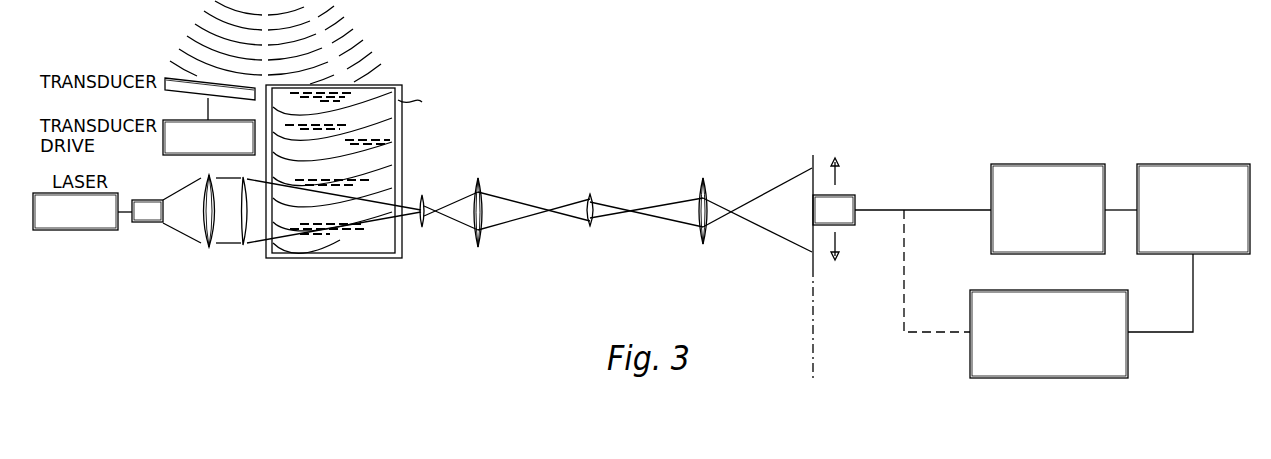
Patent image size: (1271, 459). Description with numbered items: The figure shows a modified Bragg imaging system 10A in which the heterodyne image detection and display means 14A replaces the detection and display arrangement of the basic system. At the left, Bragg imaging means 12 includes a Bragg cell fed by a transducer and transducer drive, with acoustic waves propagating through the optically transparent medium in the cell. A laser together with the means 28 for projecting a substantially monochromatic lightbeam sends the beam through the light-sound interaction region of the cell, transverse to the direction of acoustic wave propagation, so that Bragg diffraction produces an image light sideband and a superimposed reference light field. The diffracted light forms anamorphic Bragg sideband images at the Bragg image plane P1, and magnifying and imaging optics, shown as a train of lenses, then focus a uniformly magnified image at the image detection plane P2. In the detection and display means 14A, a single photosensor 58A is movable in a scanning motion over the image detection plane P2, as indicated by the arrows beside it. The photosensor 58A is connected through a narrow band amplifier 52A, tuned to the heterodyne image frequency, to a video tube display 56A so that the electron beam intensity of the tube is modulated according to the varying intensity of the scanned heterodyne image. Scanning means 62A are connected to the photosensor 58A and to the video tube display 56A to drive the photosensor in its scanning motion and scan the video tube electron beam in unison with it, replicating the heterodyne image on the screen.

The Bragg imaging means 12 is at (405, 75).
The means for projecting a substantially monochromatic lightbeam 28 is at (186, 240).
The modified Bragg imaging system 10A is at (638, 126).
The Bragg image plane P1 is at (420, 235).
The image detection plane P2 is at (813, 147).
The heterodyne image detection and display means 14A is at (1079, 238).
The narrow band amplifier 52A is at (1046, 173).
The video tube display 56A is at (1196, 173).
The photosensor 58A is at (848, 200).
The scanning means 62A is at (976, 349).